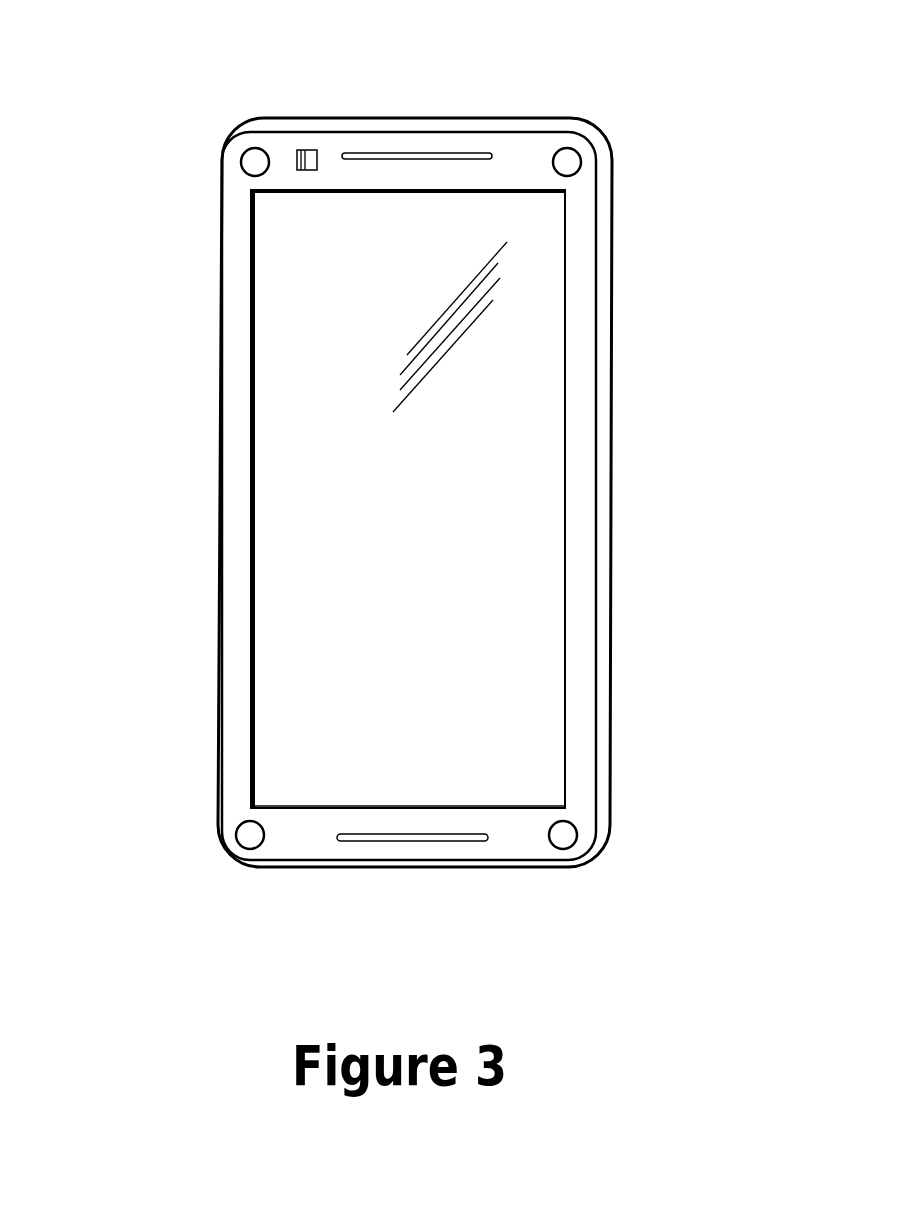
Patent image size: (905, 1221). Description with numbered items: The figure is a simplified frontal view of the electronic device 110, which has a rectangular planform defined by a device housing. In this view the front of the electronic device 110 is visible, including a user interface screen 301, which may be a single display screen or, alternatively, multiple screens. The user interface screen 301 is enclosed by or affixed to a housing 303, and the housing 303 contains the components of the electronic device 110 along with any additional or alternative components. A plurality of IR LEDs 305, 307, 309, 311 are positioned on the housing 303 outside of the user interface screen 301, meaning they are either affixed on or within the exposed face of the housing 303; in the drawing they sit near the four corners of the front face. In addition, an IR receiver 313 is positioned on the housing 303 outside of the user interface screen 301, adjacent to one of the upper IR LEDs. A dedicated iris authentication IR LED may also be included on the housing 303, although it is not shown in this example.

The electronic device 110 is at (463, 78).
The user interface screen 301 is at (516, 465).
The housing 303 is at (580, 240).
The IR LED 305 is at (257, 160).
The IR LED 307 is at (567, 162).
The IR LED 309 is at (250, 835).
The IR LED 311 is at (563, 835).
The IR receiver 313 is at (312, 152).